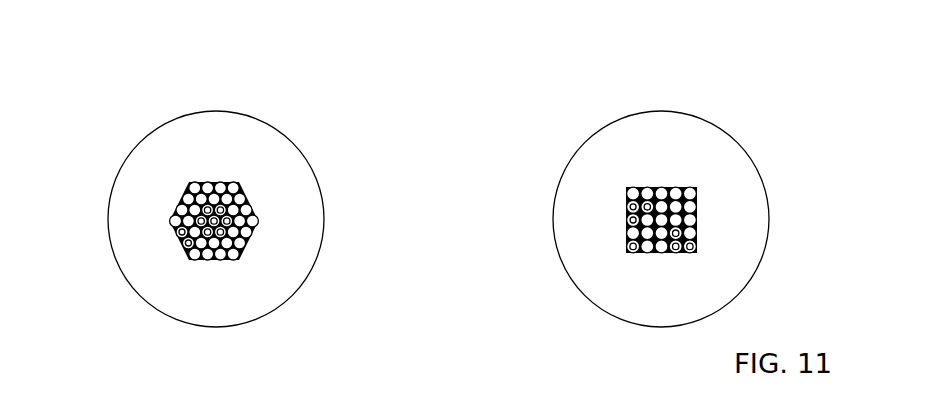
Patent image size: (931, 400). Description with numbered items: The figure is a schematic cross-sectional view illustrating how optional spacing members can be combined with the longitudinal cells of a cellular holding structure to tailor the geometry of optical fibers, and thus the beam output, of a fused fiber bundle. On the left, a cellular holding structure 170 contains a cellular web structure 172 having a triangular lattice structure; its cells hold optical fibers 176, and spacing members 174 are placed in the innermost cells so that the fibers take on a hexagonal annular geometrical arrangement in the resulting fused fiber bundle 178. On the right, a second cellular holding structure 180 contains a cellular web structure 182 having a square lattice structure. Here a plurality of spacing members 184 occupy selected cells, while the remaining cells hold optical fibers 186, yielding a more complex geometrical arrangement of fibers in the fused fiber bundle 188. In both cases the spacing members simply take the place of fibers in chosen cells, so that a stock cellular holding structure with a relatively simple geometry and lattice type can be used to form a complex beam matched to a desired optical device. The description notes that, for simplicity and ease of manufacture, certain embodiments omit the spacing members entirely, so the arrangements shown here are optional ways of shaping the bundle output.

The cellular holding structure 170 is at (293, 185).
The cellular web structure 172 is at (190, 185).
The spacing members 174 is at (230, 231).
The optical fibers 176 is at (193, 252).
The fused fiber bundle 178 is at (242, 76).
The cellular holding structure 180 is at (740, 185).
The cellular web structure 182 is at (637, 185).
The spacing members 184 is at (695, 247).
The optical fibers 186 is at (628, 218).
The fused fiber bundle 188 is at (690, 77).